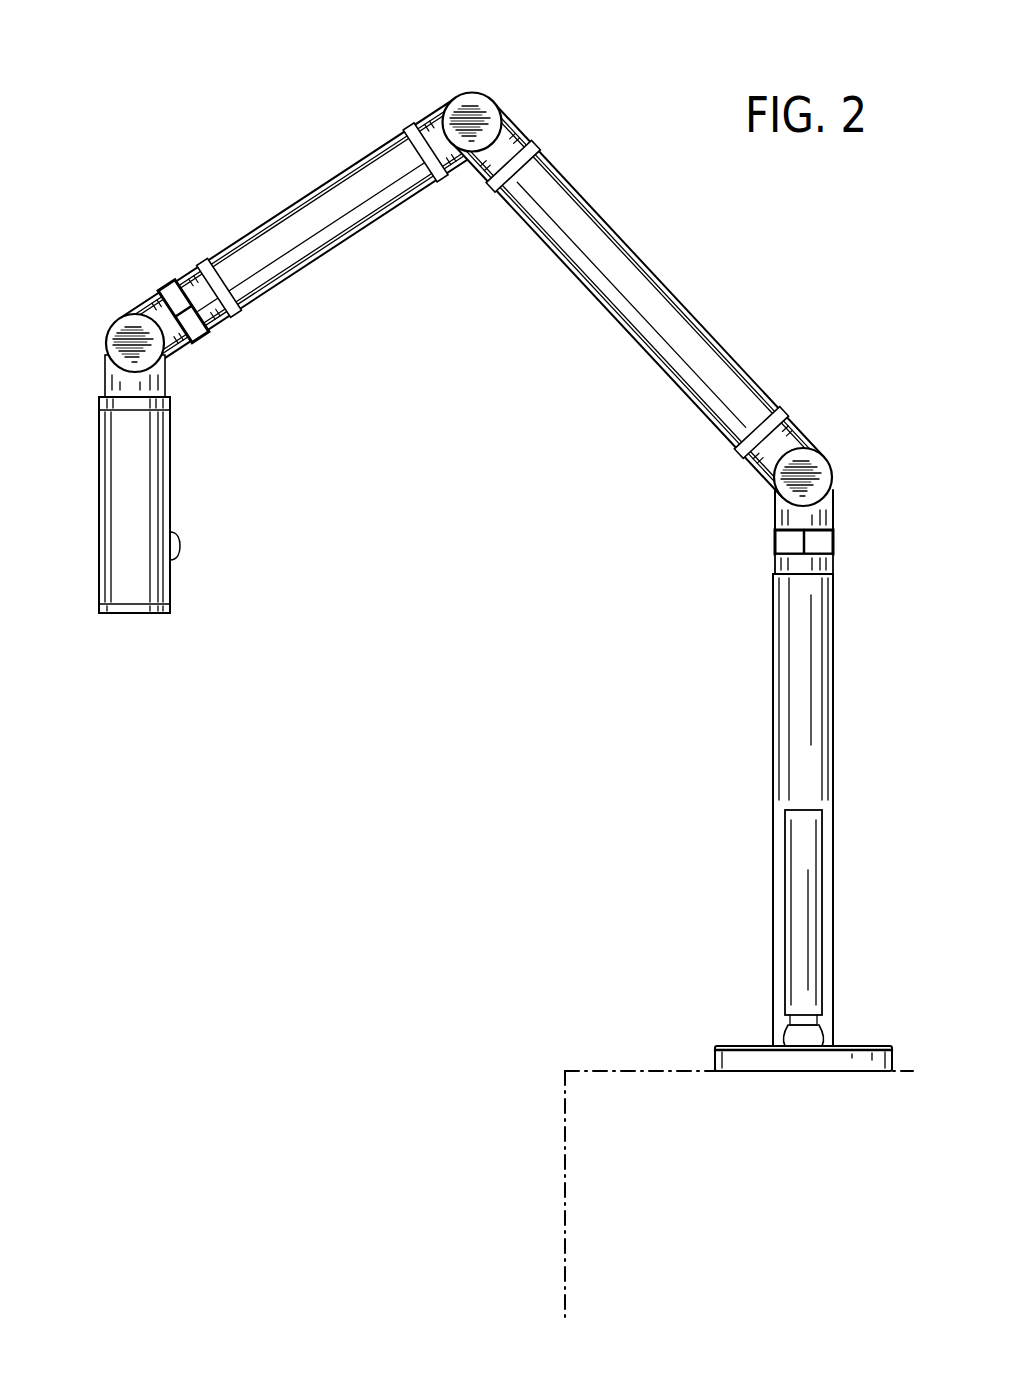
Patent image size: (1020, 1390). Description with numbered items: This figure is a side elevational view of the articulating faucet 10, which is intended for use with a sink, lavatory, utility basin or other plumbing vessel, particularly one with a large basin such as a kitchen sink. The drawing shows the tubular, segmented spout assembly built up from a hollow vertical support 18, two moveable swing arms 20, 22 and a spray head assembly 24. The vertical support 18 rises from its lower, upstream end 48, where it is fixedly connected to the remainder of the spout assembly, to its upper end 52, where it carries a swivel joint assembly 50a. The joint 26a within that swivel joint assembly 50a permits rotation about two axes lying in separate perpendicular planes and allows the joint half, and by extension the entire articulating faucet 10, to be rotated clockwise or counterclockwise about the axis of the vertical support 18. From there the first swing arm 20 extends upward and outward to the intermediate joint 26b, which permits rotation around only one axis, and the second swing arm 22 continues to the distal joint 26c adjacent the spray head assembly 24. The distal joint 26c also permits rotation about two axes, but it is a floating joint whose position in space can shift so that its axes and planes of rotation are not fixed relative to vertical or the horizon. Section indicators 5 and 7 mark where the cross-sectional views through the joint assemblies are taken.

The articulating faucet 10 is at (778, 294).
The vertical support 18 is at (800, 705).
The swing arm 20 is at (658, 276).
The swing arm 22 is at (278, 272).
The spray head assembly 24 is at (135, 490).
The joint 26a is at (816, 455).
The joint 26b is at (473, 92).
The distal joint 26c is at (117, 320).
The lower, upstream end 48 is at (722, 1012).
The swivel joint assembly 50a is at (727, 537).
The upper end 52 is at (725, 585).
The section line 5 is at (445, 88).
The section line 7 is at (537, 53).